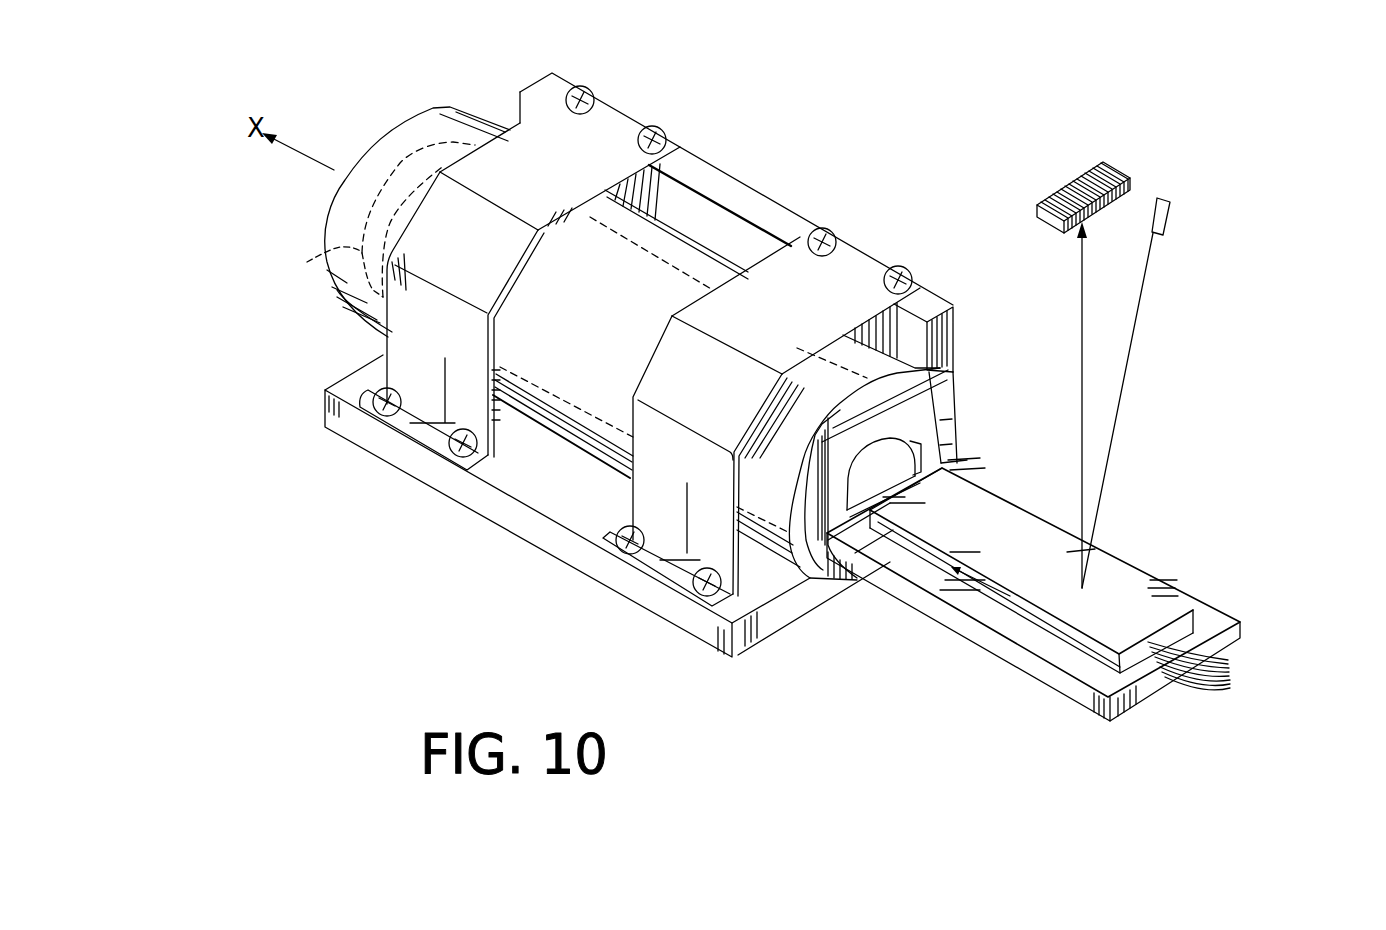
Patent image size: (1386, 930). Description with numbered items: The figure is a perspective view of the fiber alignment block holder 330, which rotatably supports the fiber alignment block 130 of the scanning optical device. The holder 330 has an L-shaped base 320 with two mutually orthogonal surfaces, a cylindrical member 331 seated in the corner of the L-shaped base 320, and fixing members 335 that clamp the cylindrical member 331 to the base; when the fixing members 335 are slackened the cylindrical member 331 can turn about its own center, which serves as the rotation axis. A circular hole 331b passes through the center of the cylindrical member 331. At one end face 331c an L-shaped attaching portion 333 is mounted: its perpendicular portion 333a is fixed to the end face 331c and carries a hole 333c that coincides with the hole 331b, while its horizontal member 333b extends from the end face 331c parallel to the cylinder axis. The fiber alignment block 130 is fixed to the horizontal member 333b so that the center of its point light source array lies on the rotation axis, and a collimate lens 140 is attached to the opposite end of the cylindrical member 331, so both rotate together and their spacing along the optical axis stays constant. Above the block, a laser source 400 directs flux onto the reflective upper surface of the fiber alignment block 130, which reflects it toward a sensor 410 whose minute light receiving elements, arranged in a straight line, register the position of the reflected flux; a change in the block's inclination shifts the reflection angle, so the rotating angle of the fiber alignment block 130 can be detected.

The L-shaped base 320 is at (737, 197).
The cylindrical member 331 is at (582, 448).
The circular hole 331b is at (545, 395).
The end face 331c is at (822, 565).
The fixing members 335 is at (608, 127).
The collimate lens 140 is at (307, 262).
The attaching portion 333 is at (1010, 652).
The perpendicular portion 333a is at (947, 413).
The horizontal member 333b is at (1142, 573).
The hole 333c is at (957, 457).
The fiber alignment block 130 is at (1170, 608).
The sensor 410 is at (1068, 192).
The laser source 400 is at (1170, 213).
The fiber alignment block holder 330 is at (848, 632).